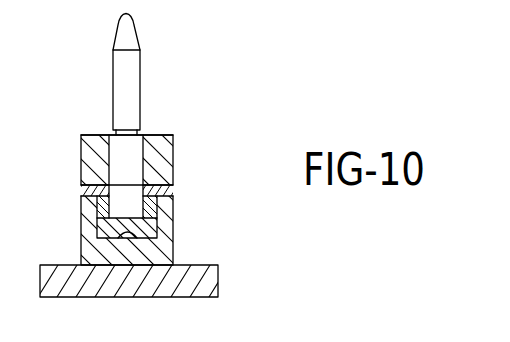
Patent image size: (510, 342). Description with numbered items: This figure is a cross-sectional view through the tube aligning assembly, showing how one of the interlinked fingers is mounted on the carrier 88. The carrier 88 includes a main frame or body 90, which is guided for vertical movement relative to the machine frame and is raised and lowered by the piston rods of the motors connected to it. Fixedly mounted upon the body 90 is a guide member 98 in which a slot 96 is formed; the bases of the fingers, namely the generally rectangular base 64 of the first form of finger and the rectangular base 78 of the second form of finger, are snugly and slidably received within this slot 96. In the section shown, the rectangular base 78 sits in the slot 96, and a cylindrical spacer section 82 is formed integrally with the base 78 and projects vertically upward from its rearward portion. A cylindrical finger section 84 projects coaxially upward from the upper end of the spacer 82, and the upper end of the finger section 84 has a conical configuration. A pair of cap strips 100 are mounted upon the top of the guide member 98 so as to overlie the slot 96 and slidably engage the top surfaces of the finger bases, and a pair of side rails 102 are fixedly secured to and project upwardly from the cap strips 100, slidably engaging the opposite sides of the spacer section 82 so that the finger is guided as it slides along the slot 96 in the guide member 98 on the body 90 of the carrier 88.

The cylindrical finger section 84 is at (141, 71).
The cylindrical spacer section 82 is at (133, 157).
The side rails 102 is at (88, 135).
The cap strips 100 is at (163, 188).
The base 64 is at (153, 205).
The rectangular base 78 is at (153, 228).
The slot 96 is at (140, 238).
The guide member 98 is at (81, 243).
The main frame or body 90 is at (218, 288).
The carrier 88 is at (250, 244).